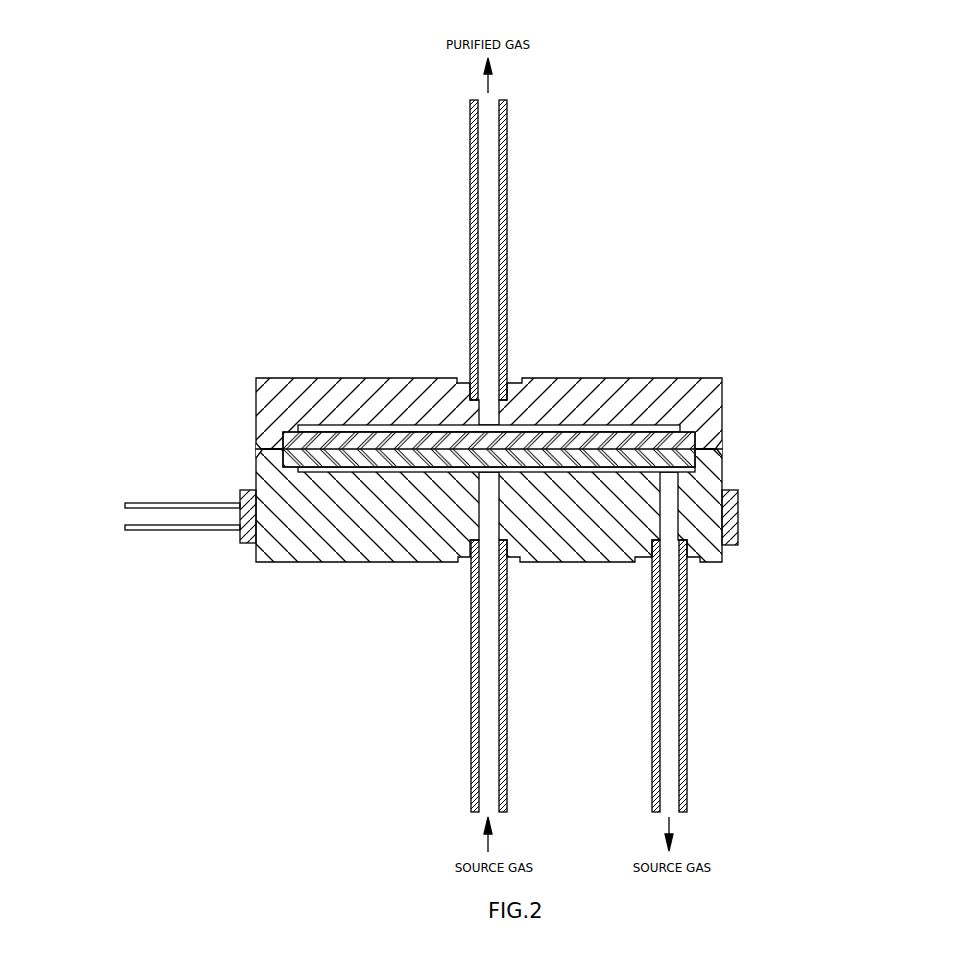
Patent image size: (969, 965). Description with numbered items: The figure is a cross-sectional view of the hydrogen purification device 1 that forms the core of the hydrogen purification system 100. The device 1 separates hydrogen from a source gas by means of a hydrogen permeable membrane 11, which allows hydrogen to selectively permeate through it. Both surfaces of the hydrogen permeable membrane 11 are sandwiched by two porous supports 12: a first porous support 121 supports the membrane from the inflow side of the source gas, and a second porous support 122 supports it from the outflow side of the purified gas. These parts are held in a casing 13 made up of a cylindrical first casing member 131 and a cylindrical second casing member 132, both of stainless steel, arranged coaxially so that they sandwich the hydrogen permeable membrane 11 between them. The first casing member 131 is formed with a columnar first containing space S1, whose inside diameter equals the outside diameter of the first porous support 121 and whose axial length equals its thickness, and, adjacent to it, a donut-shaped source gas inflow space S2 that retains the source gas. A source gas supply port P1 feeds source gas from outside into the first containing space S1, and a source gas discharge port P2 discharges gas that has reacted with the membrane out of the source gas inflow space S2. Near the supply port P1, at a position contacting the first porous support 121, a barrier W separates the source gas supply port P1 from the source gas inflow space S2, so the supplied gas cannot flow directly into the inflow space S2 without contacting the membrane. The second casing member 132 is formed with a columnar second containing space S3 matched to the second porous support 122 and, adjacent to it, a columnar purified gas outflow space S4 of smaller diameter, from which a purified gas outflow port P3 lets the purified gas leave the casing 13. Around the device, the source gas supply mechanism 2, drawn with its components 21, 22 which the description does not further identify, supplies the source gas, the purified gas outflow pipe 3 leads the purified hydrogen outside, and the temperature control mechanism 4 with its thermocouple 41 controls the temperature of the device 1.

The hydrogen purification system 100 is at (465, 456).
The hydrogen purification device 1 is at (516, 449).
The hydrogen permeable membrane 11 is at (578, 445).
The porous supports 12 is at (427, 437).
The first porous support 121 is at (263, 460).
The second porous support 122 is at (263, 445).
The casing 13 is at (578, 468).
The first casing member 131 is at (544, 498).
The second casing member 132 is at (723, 403).
The source gas supply mechanism 2 is at (596, 676).
The source gas supply pipe 21 is at (471, 680).
The source gas discharge pipe 22 is at (687, 707).
The purified gas outflow pipe 3 is at (507, 238).
The temperature control mechanism 4 is at (384, 530).
The thermocouple 41 is at (171, 532).
The first containing space S1 is at (323, 460).
The source gas inflow space S2 is at (397, 473).
The second containing space S3 is at (336, 432).
The purified gas outflow space S4 is at (399, 423).
The source gas supply port P1 is at (488, 482).
The source gas discharge port P2 is at (667, 482).
The purified gas outflow port P3 is at (487, 410).
The barrier W is at (470, 482).